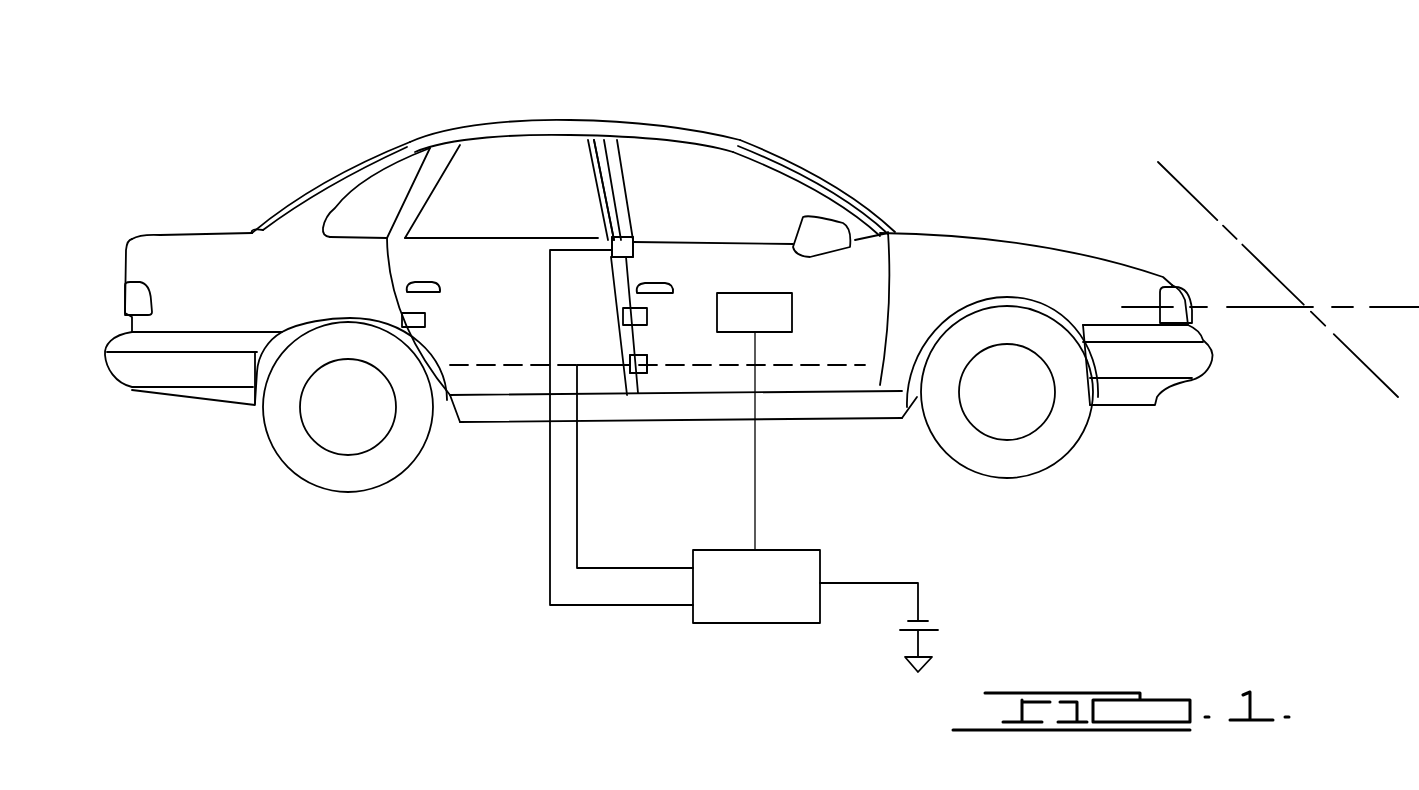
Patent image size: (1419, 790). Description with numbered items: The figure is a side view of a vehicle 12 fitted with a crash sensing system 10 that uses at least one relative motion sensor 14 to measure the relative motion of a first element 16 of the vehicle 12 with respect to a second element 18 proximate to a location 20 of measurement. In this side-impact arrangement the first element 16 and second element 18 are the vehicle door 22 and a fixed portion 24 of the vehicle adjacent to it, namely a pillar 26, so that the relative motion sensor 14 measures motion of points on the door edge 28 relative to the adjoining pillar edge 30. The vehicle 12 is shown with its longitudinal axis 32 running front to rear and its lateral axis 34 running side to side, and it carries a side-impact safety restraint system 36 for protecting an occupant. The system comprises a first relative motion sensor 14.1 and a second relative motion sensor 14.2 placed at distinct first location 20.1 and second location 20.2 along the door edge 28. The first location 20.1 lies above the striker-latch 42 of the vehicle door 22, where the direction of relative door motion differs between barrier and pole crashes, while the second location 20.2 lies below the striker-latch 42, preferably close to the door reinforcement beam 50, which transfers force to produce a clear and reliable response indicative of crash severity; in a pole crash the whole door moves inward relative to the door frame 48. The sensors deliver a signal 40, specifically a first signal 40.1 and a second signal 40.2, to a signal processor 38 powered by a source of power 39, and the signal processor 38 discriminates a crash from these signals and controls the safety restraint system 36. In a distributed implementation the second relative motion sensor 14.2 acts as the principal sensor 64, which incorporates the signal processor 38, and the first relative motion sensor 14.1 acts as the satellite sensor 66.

The crash sensing system 10 is at (455, 518).
The vehicle 12 is at (753, 140).
The relative motion sensor 14 is at (688, 349).
The first relative motion sensor 14.1 is at (690, 224).
The second relative motion sensor 14.2 is at (667, 431).
The first element 16 is at (618, 195).
The second element 18 is at (641, 144).
The location 20 is at (606, 316).
The first location 20.1 is at (603, 236).
The second location 20.2 is at (652, 357).
The vehicle door 22 is at (857, 220).
The fixed portion 24 is at (641, 144).
The pillar 26 is at (605, 193).
The door edge 28 is at (633, 274).
The pillar edge 30 is at (622, 263).
The longitudinal axis 32 is at (1382, 305).
The lateral axis 34 is at (1348, 350).
The side-impact safety restraint system 36 is at (792, 313).
The signal processor 38 is at (732, 623).
The source of power 39 is at (942, 618).
The signal 40 is at (581, 465).
The first signal 40.1 is at (550, 583).
The second signal 40.2 is at (578, 527).
The striker-latch 42 is at (402, 318).
The door frame 48 is at (707, 137).
The door reinforcement beam 50 is at (483, 363).
The principal sensor 64 is at (638, 375).
The satellite sensor 66 is at (637, 243).